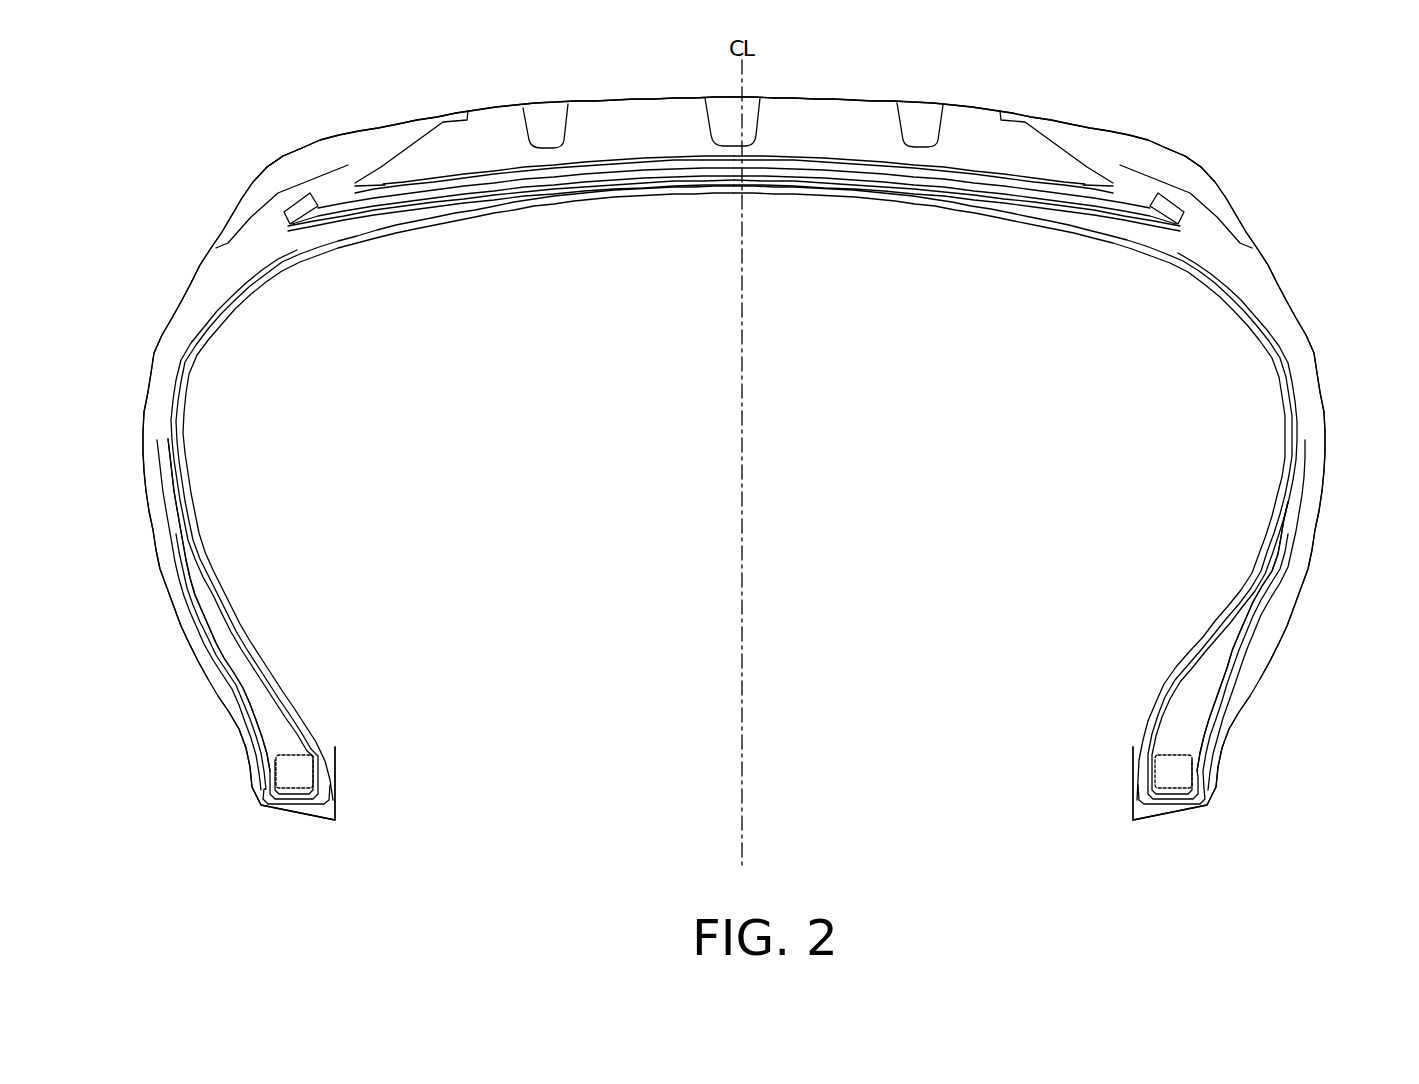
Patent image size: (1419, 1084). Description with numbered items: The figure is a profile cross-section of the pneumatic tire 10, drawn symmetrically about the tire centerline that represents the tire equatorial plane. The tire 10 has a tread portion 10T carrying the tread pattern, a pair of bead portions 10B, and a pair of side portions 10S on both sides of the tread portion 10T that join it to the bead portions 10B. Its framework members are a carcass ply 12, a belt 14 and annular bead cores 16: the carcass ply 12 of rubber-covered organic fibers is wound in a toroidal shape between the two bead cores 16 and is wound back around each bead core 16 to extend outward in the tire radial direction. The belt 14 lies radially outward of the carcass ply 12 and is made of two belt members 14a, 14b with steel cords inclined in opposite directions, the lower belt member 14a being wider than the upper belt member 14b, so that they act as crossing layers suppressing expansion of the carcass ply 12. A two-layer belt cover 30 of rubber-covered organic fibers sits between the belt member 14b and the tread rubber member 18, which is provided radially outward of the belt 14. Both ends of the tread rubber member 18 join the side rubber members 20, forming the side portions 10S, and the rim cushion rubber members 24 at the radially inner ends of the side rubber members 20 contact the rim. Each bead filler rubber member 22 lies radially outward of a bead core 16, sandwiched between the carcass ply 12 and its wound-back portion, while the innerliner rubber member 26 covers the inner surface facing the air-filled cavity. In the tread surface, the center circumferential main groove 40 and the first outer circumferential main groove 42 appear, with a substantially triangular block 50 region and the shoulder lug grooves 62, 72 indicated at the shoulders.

The tire 10 is at (896, 91).
The tread portion 10T is at (1143, 136).
The side portions 10S is at (1328, 462).
The bead portions 10B is at (1216, 806).
The carcass ply 12 is at (1295, 400).
The belt 14 is at (808, 206).
The belt member 14a is at (1180, 226).
The belt member 14b is at (1156, 204).
The bead core 16 is at (1172, 782).
The tread rubber member 18 is at (820, 122).
The side rubber members 20 is at (1310, 500).
The bead filler rubber member 22 is at (1222, 680).
The rim cushion rubber members 24 is at (1222, 727).
The innerliner rubber member 26 is at (568, 200).
The belt cover 30 is at (1112, 182).
The center circumferential main groove 40 is at (750, 128).
The first outer circumferential main groove 42 is at (548, 125).
The substantially triangular blocks 50 is at (933, 125).
The shoulder lug grooves 62 is at (378, 150).
The shoulder lug grooves 72 is at (1192, 186).